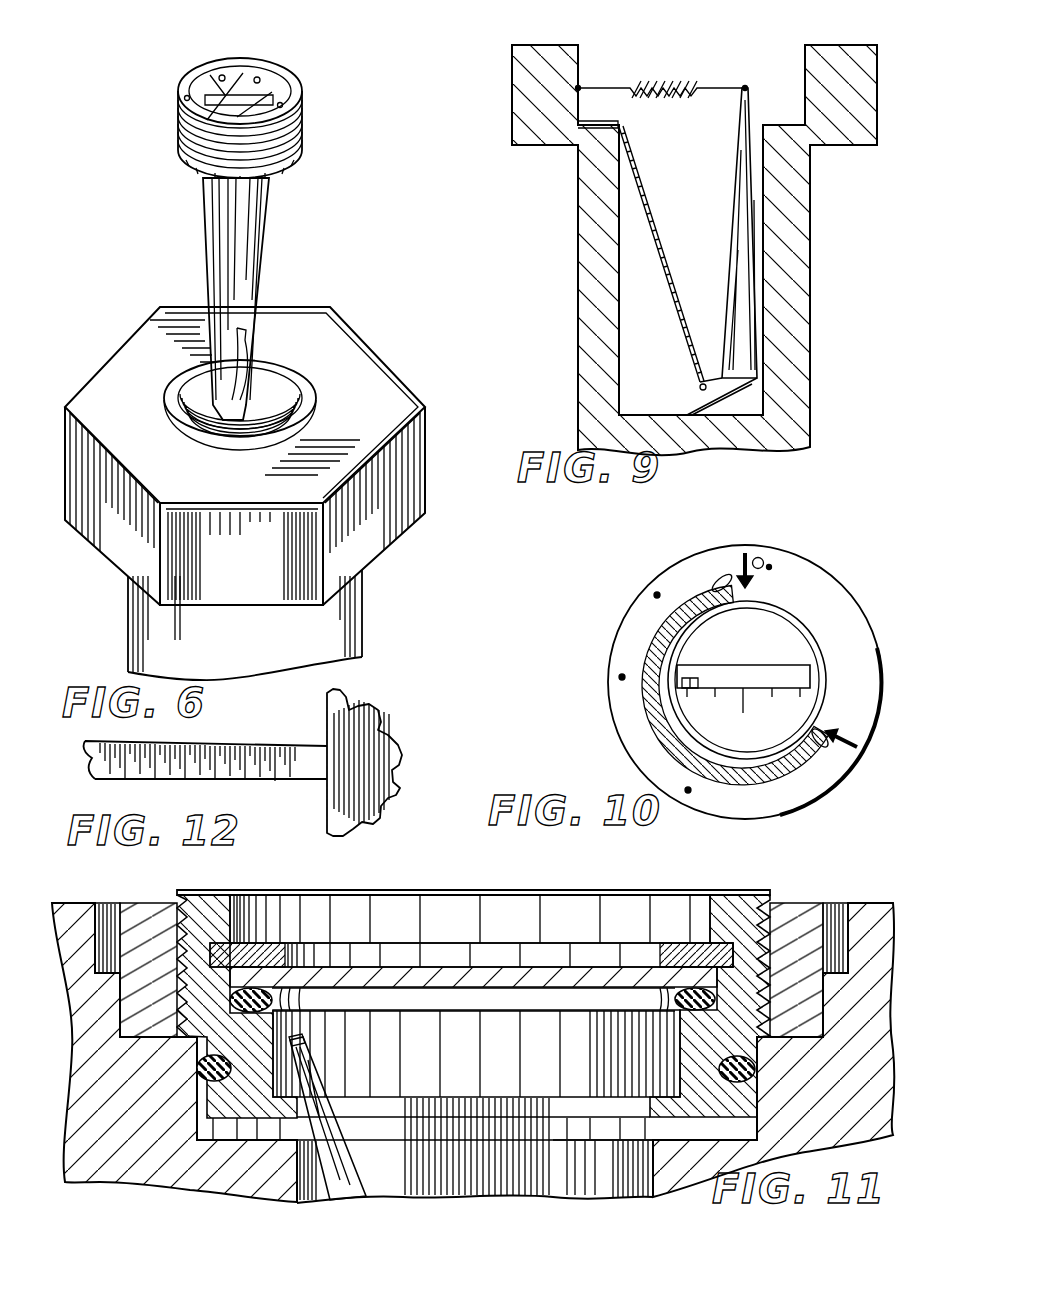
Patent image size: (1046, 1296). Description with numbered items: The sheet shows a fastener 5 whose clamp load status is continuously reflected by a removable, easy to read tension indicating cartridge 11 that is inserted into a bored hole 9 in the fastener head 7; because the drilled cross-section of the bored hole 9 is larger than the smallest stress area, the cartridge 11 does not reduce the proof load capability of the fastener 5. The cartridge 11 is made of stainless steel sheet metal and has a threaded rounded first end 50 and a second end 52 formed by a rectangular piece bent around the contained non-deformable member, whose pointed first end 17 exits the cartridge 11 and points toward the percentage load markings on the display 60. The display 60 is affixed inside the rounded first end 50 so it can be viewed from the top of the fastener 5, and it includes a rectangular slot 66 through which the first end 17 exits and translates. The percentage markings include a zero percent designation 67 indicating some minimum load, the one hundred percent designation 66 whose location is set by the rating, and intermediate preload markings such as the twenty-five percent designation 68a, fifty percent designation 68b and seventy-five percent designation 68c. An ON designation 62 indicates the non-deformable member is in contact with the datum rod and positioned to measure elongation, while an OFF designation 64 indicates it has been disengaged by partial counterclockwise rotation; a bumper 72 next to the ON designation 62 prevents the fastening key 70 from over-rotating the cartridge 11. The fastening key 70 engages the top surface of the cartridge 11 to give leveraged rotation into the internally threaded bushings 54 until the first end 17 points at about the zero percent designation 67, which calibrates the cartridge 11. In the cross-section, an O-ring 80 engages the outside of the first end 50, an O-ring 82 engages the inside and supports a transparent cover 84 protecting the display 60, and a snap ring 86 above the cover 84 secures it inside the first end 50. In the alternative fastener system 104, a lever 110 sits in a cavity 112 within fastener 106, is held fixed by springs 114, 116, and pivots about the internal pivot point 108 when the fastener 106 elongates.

In FIG. 6, the fastener 5 is at (133, 610).
In FIG. 6, the fastener head 7 is at (378, 385).
In FIG. 11, the fastener head 7 is at (878, 903).
In FIG. 6, the bored hole 9 is at (284, 372).
In FIG. 6, the cartridge 11 is at (199, 185).
In FIG. 11, the cartridge 11 is at (560, 1170).
In FIG. 6, the first end 17 is at (275, 97).
In FIG. 9, the first end 17 is at (752, 108).
In FIG. 10, the first end 17 is at (678, 682).
In FIG. 11, the first end 17 is at (310, 1063).
In FIG. 6, the first end 50 is at (299, 124).
In FIG. 11, the first end 50 is at (745, 912).
In FIG. 6, the second end 52 is at (232, 418).
In FIG. 11, the second end 52 is at (727, 888).
In FIG. 11, the internally threaded bushings 54 is at (807, 903).
In FIG. 10, the display 60 is at (780, 610).
In FIG. 10, the "ON" designation 62 is at (688, 558).
In FIG. 10, the "OFF" designation 64 is at (827, 787).
In FIG. 10, the rectangular slot / "100%" designation 66 is at (807, 663).
In FIG. 10, the "0%" designation 67 is at (755, 550).
In FIG. 12, the fastening key 70 is at (313, 784).
In FIG. 10, the bumper 72 is at (770, 565).
In FIG. 10, the 25% designation 68a is at (655, 594).
In FIG. 10, the 50% designation 68b is at (620, 676).
In FIG. 10, the 75% designation 68c is at (687, 793).
In FIG. 11, the O-ring 80 is at (193, 1080).
In FIG. 11, the O-ring 82 is at (700, 1010).
In FIG. 11, the transparent cover 84 is at (518, 963).
In FIG. 11, the snap ring 86 is at (267, 950).
In FIG. 9, the fastener system 104 is at (823, 318).
In FIG. 9, the fastener 106 is at (797, 180).
In FIG. 9, the pivot point 108 is at (700, 390).
In FIG. 9, the lever 110 is at (730, 293).
In FIG. 9, the cavity 112 is at (658, 245).
In FIG. 9, the spring 114 is at (664, 292).
In FIG. 9, the spring 116 is at (684, 86).